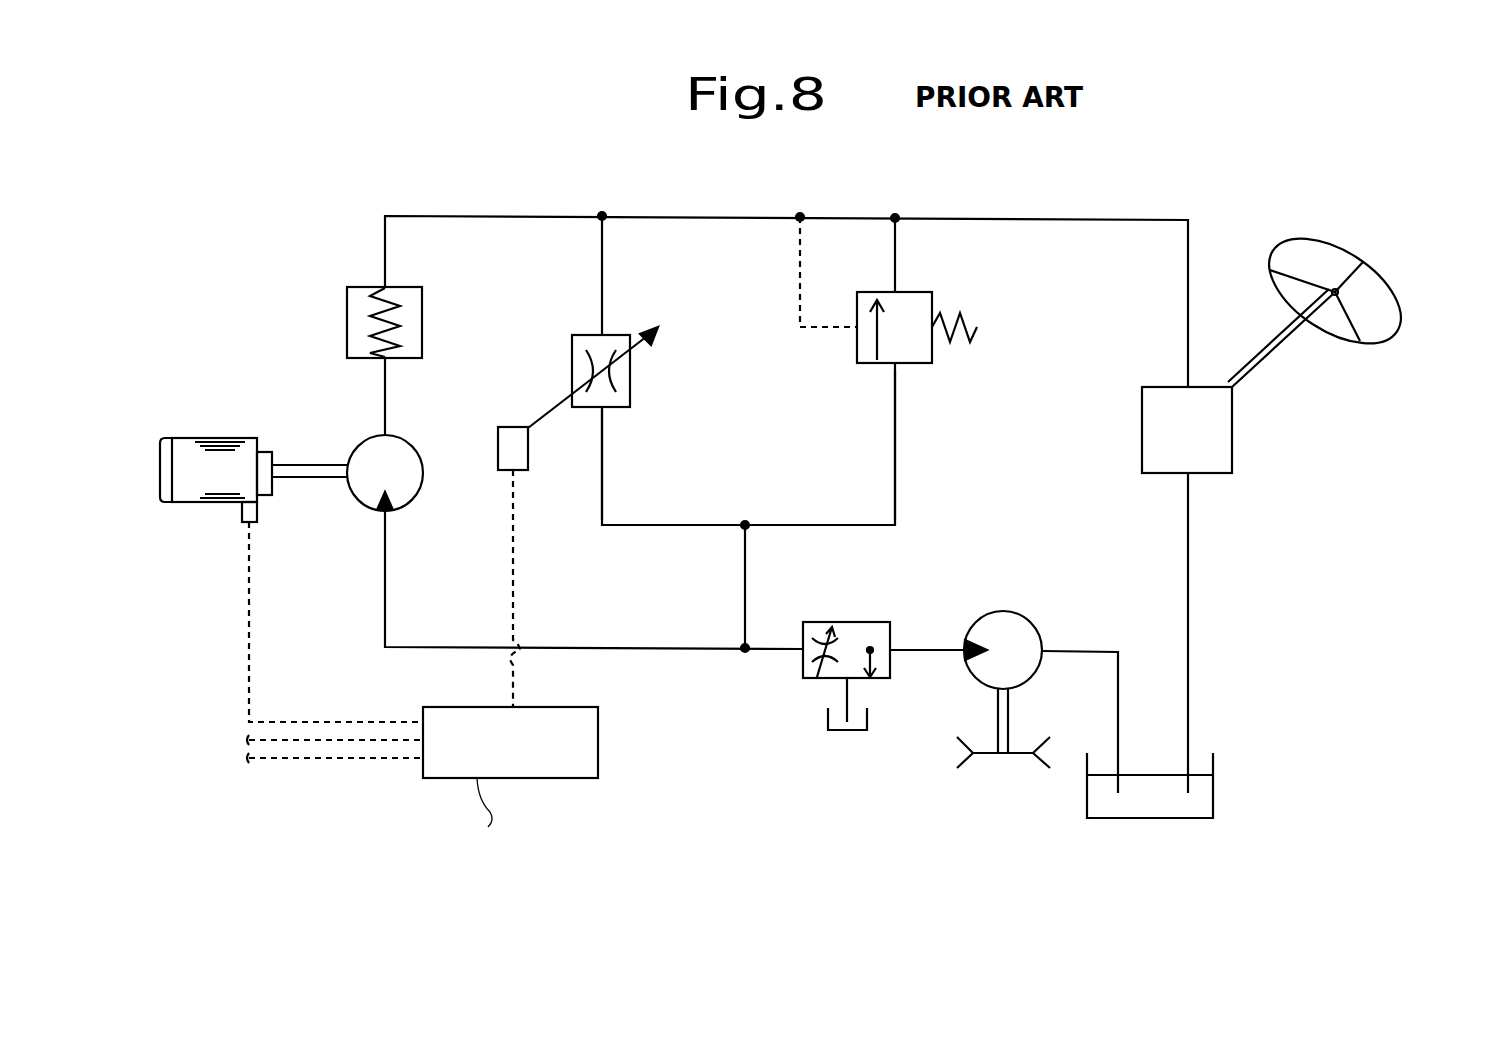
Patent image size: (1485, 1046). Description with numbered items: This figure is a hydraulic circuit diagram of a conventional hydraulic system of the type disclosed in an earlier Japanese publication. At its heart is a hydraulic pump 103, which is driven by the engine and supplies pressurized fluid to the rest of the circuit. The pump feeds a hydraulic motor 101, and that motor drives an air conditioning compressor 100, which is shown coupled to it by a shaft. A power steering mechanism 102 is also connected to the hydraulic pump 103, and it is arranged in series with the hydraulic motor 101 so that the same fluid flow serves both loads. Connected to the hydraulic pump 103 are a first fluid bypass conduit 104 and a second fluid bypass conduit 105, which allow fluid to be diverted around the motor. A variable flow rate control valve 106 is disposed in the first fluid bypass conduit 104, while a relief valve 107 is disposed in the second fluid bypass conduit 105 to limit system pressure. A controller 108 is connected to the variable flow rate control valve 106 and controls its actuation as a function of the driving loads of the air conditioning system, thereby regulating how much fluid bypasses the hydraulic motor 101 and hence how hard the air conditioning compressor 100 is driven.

The air conditioning compressor 100 is at (183, 503).
The hydraulic motor 101 is at (407, 437).
The power steering mechanism 102 is at (1217, 435).
The hydraulic pump 103 is at (1008, 620).
The first fluid bypass conduit 104 is at (602, 462).
The second fluid bypass conduit 105 is at (895, 483).
The variable flow rate control valve 106 is at (620, 375).
The relief valve 107 is at (923, 353).
The controller 108 is at (542, 770).